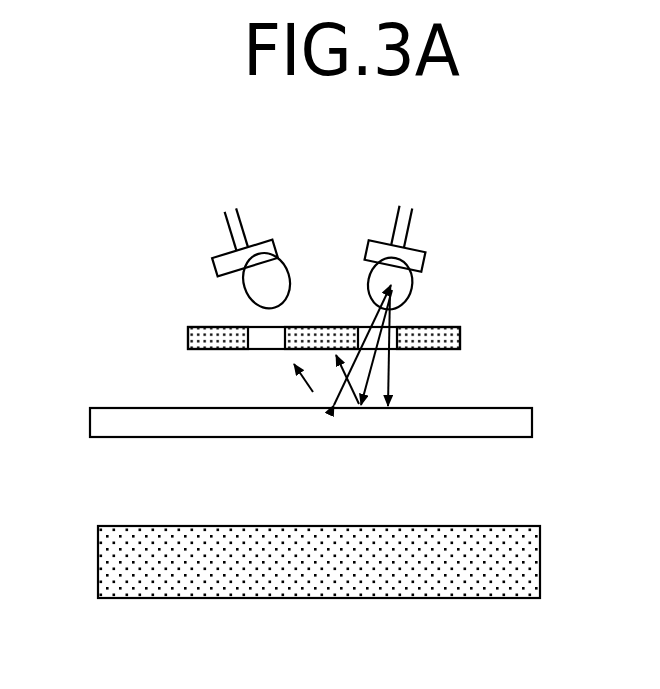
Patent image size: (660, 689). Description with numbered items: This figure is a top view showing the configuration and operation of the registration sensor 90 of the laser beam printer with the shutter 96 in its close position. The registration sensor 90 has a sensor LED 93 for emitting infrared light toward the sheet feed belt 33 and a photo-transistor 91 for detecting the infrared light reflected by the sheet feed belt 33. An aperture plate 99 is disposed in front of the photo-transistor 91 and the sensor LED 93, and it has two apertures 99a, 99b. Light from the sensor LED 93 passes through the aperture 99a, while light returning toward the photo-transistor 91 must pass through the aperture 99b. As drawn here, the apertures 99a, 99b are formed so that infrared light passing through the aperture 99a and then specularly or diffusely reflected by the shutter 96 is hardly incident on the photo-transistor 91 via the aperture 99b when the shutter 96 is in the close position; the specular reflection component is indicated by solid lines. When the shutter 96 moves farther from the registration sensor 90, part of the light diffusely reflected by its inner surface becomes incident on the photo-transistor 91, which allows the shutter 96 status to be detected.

The registration sensor 90 is at (459, 250).
The photo-transistor 91 is at (247, 286).
The sensor LED 93 is at (400, 285).
The aperture plate 99 is at (459, 330).
The aperture 99a is at (396, 350).
The aperture 99b is at (260, 335).
The shutter 96 is at (478, 409).
The sheet feed belt 33 is at (480, 527).